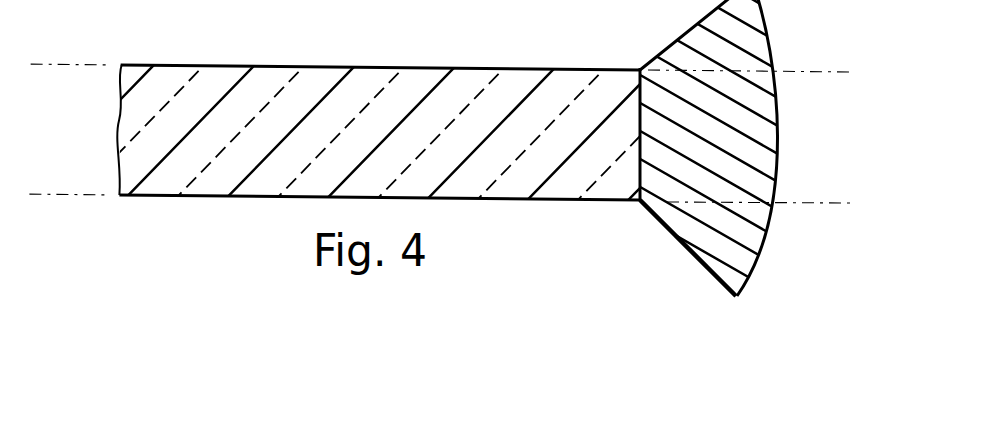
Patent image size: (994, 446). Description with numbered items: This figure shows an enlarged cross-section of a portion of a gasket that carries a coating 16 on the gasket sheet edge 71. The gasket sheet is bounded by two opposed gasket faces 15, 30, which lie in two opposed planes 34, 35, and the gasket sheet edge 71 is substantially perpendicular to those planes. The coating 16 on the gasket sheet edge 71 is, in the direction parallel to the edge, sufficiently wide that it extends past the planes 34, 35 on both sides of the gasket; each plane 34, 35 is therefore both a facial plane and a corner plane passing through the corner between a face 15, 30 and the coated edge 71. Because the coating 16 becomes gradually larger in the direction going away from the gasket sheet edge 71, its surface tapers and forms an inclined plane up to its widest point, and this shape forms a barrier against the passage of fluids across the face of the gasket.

The gasket face 15 is at (338, 66).
The gasket face 30 is at (253, 198).
The gasket sheet edge 71 is at (638, 122).
The coating 16 is at (672, 238).
The plane 34 is at (842, 73).
The plane 35 is at (848, 204).